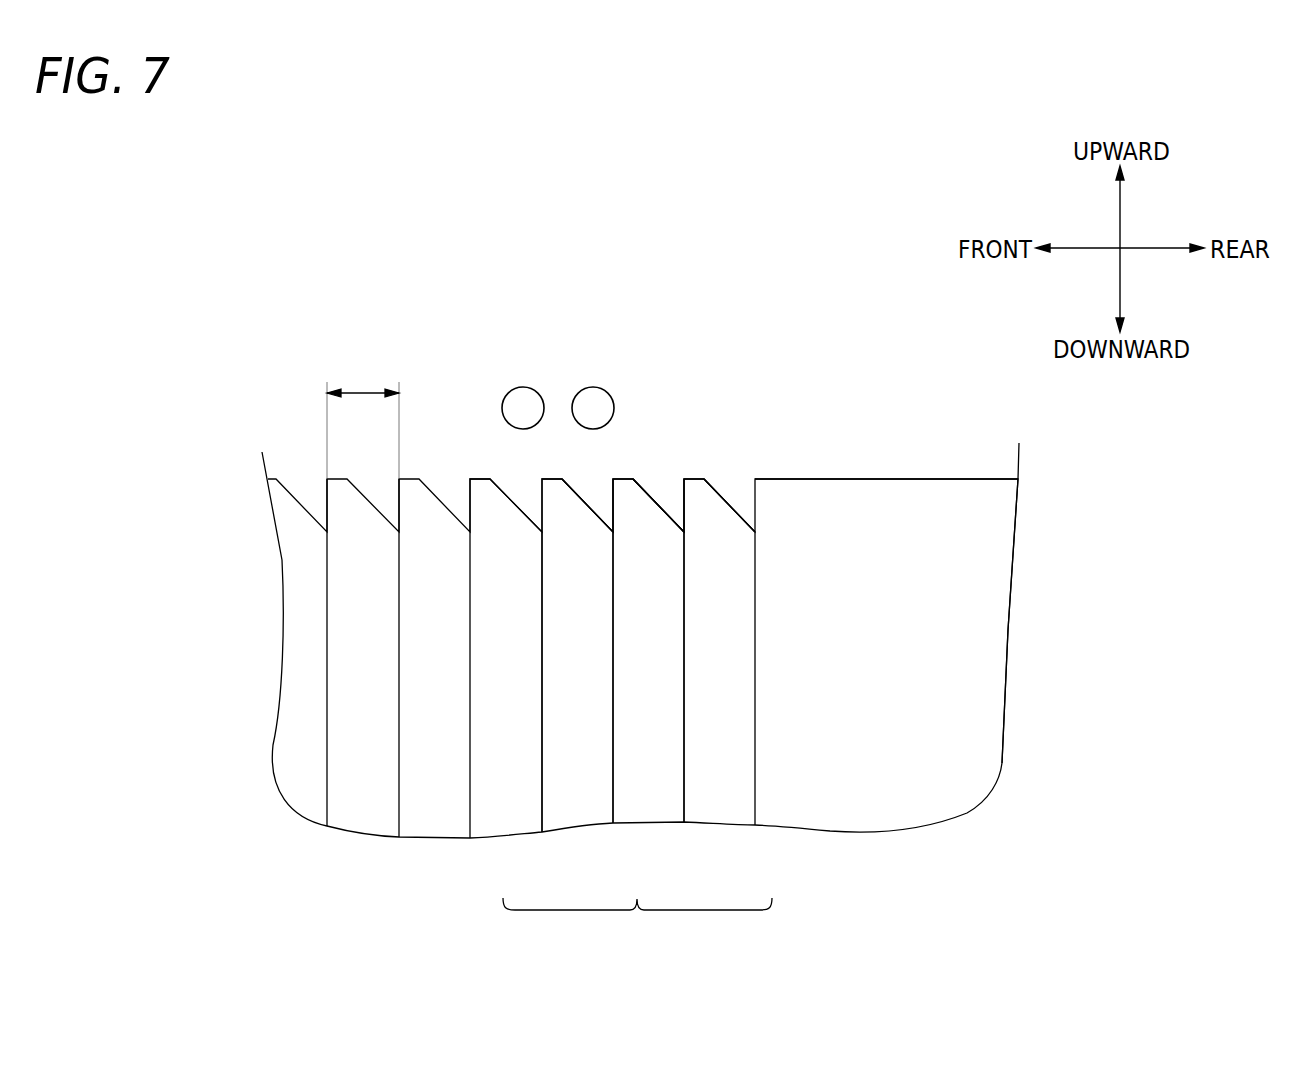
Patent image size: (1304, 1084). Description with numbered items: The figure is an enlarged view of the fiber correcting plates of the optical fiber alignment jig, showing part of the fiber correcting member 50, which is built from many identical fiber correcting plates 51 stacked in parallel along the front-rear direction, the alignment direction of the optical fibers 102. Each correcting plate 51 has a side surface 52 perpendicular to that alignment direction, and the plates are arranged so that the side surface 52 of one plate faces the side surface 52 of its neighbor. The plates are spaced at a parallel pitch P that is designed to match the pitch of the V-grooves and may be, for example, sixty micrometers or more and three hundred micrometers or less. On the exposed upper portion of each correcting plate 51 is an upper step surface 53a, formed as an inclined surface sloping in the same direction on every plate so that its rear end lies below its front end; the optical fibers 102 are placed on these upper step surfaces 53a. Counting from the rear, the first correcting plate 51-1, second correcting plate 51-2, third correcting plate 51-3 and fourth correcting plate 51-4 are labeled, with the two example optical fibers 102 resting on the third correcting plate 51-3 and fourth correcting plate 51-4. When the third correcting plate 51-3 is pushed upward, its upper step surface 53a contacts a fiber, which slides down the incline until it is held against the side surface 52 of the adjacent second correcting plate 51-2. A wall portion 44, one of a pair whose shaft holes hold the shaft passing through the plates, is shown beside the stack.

The fiber correcting member 50 is at (393, 302).
The wall portion 44 is at (870, 488).
The fiber correcting plate 51 is at (637, 923).
The first correcting plate 51-1 is at (718, 800).
The second correcting plate 51-2 is at (648, 800).
The third correcting plate 51-3 is at (575, 800).
The fourth correcting plate 51-4 is at (505, 798).
The side surface 52 is at (603, 487).
The upper step surface 53a is at (652, 494).
The optical fiber 102 is at (587, 390).
The parallel pitch P is at (363, 390).